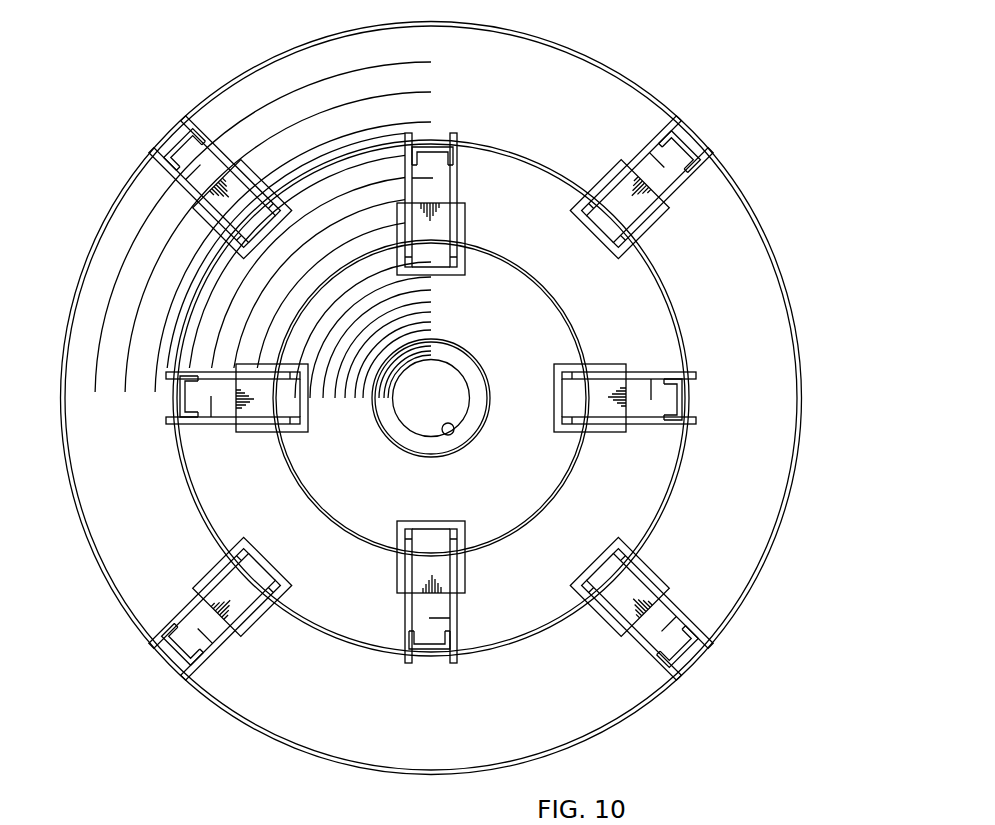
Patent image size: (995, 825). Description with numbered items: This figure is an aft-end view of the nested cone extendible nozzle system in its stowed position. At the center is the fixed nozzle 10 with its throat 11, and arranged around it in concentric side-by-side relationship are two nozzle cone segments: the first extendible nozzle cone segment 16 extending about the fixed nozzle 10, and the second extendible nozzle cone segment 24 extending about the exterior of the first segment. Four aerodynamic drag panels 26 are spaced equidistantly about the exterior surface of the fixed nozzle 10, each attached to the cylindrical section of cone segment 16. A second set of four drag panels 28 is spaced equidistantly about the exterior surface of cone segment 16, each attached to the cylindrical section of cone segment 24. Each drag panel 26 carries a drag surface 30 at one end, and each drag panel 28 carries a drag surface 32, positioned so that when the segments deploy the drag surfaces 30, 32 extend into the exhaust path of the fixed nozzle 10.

The fixed nozzle 10 is at (562, 308).
The throat 11 is at (453, 434).
The first extendible nozzle cone segment 16 is at (538, 150).
The second extendible nozzle cone segment 24 is at (618, 67).
The aerodynamic drag panels 26 is at (459, 172).
The second set of aerodynamic drag panels 28 is at (675, 192).
The drag surface 30 is at (466, 216).
The drag surface 32 is at (642, 230).